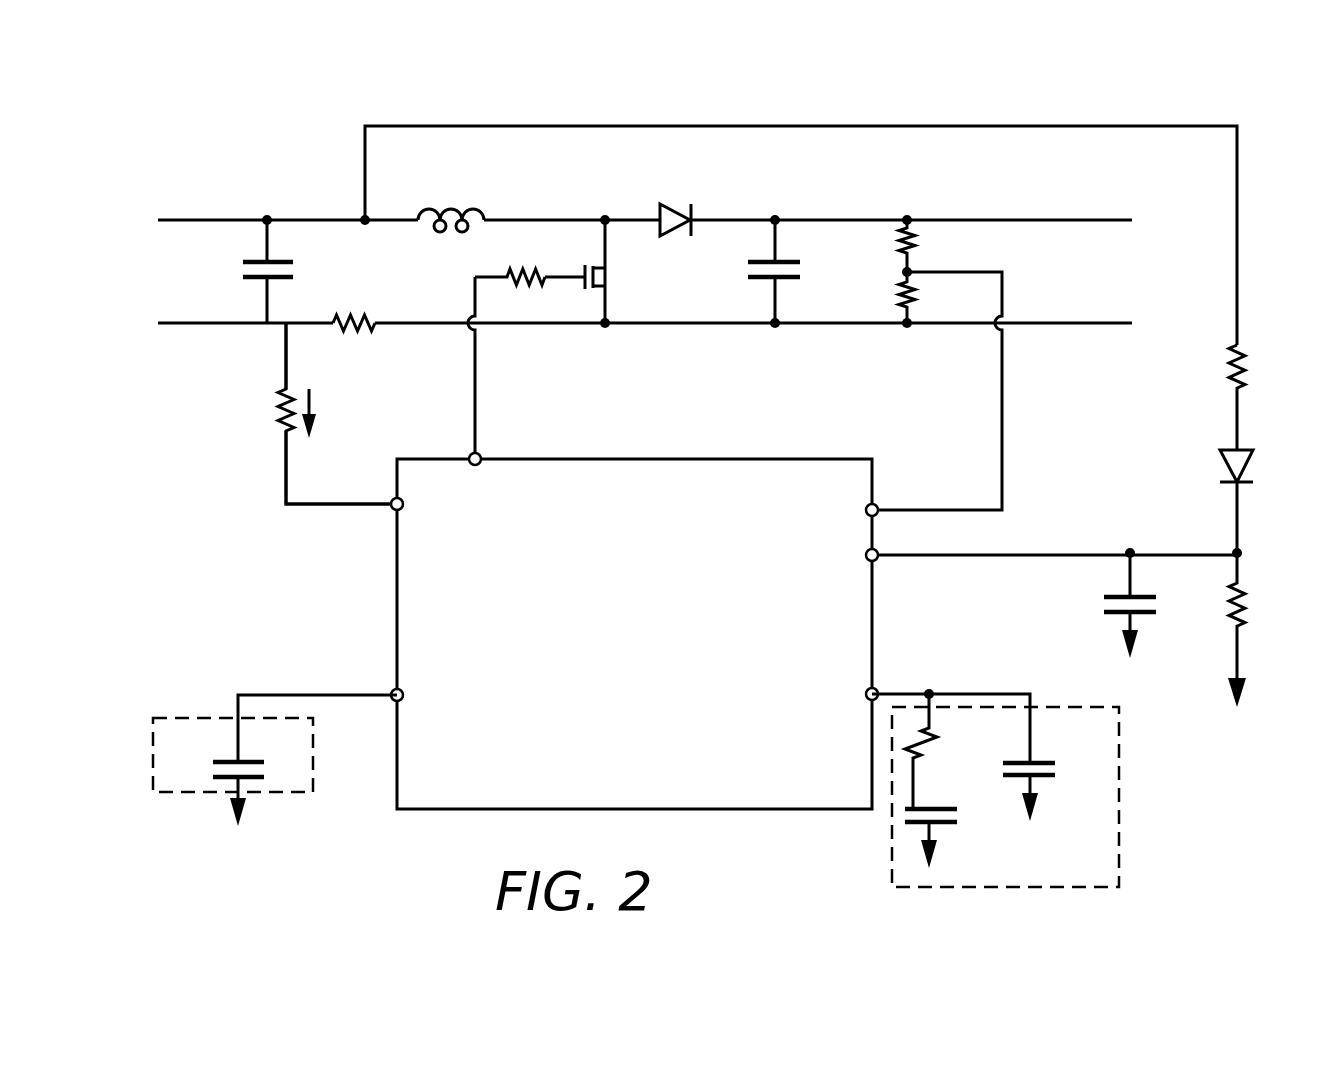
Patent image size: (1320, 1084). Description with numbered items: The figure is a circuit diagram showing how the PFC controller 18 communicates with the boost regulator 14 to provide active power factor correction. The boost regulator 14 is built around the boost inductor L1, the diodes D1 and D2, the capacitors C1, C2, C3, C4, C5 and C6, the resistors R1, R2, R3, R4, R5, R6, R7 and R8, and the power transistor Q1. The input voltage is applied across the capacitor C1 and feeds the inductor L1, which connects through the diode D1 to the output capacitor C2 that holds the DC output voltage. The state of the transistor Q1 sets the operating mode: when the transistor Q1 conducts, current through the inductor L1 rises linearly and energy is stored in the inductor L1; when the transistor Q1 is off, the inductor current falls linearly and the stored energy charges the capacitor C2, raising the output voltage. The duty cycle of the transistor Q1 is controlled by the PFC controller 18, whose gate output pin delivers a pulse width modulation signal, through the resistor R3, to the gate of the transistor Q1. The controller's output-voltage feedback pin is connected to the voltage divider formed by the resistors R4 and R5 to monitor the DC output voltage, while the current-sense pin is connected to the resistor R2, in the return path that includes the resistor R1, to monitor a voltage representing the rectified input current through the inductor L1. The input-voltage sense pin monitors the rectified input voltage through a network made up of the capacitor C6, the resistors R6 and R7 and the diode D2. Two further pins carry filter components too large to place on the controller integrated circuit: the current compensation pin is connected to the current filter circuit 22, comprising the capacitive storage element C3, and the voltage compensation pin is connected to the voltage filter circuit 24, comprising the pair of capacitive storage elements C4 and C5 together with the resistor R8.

The boost regulator 14 is at (274, 153).
The PFC controller 18 is at (753, 459).
The current filter circuit 22 is at (182, 718).
The voltage filter circuit 24 is at (1056, 706).
The input capacitor C1 is at (289, 271).
The capacitor C2 is at (755, 271).
The capacitive storage element C3 is at (285, 760).
The capacitive storage element C4 is at (951, 838).
The capacitive storage element C5 is at (1047, 790).
The capacitor C6 is at (1149, 605).
The boost inductor L1 is at (451, 205).
The diode D1 is at (678, 206).
The diode D2 is at (1256, 501).
The power transistor Q1 is at (595, 271).
The resistor R1 is at (354, 307).
The resistor R2 is at (318, 413).
The resistor R3 is at (510, 262).
The resistor R4 is at (886, 246).
The resistor R5 is at (886, 295).
The resistor R6 is at (1257, 397).
The resistor R7 is at (1258, 630).
The resistor R8 is at (942, 751).